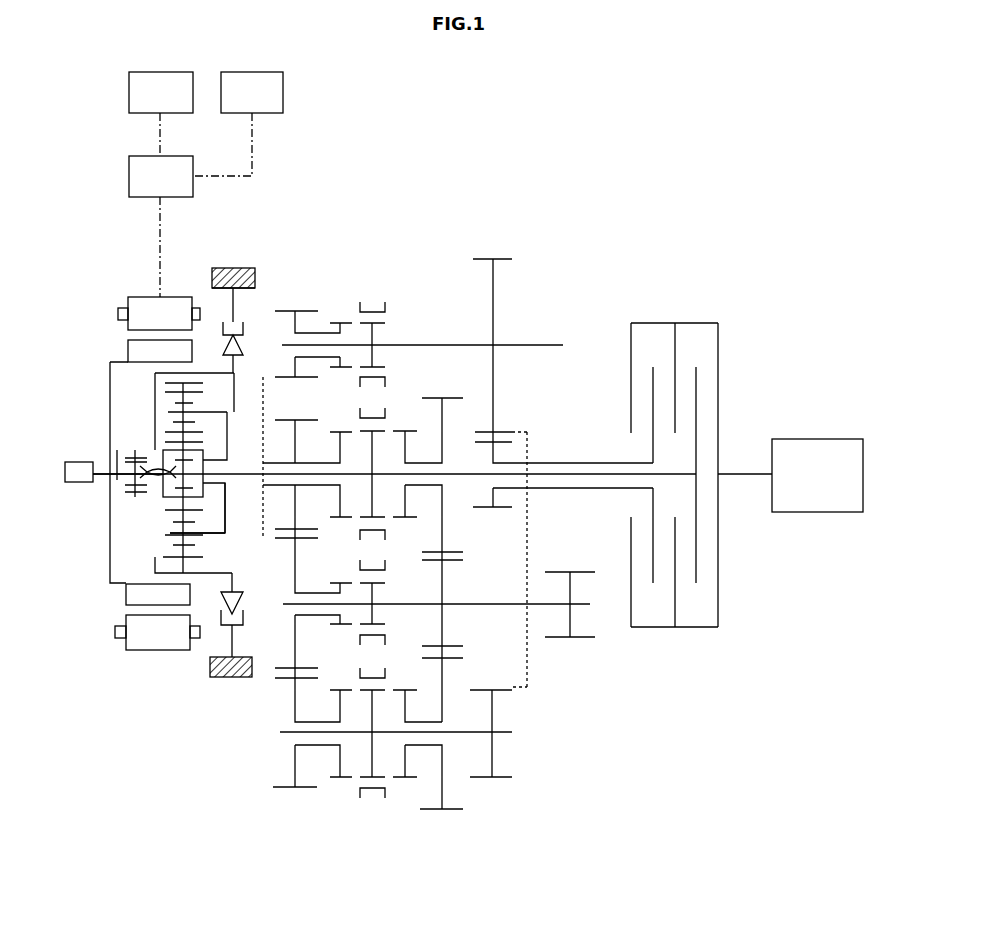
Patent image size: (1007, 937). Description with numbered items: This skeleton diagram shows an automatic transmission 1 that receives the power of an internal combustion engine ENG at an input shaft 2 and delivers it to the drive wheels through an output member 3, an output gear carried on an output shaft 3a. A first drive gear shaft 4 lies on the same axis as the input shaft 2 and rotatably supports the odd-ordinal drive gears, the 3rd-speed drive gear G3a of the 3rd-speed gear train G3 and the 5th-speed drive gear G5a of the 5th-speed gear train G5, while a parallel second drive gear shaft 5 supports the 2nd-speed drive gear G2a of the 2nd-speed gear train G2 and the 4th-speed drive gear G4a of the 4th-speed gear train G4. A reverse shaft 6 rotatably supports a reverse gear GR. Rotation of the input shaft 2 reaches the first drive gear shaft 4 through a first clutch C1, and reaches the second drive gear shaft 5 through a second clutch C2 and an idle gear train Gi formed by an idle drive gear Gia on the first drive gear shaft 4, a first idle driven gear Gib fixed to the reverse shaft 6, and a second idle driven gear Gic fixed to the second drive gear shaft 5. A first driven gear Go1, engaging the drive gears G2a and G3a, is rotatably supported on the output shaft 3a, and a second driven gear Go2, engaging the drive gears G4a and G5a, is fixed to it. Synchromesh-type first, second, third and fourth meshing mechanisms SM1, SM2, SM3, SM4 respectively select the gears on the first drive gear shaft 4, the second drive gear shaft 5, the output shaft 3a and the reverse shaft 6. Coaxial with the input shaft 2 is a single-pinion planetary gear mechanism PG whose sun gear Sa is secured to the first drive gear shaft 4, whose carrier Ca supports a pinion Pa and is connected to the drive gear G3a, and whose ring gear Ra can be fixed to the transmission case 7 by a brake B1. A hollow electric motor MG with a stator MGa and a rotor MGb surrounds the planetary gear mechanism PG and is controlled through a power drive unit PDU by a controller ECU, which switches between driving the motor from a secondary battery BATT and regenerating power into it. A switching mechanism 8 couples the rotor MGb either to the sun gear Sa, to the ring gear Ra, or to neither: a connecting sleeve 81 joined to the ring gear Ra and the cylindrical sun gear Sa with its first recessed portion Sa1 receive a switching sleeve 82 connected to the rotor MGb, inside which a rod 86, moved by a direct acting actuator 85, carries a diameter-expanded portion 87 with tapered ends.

The automatic transmission 1 is at (608, 218).
The input shaft 2 is at (743, 472).
The output member 3 is at (558, 640).
The output shaft 3a is at (585, 607).
The first drive gear shaft 4 is at (585, 472).
The second drive gear shaft 5 is at (510, 735).
The reverse shaft 6 is at (545, 350).
The transmission case 7 is at (233, 268).
The switching mechanism 8 is at (101, 468).
The connecting sleeve 81 is at (125, 455).
The switching sleeve 82 is at (125, 465).
The direct acting actuator 85 is at (82, 487).
The rod 86 is at (104, 466).
The diameter-expanded portion 87 is at (158, 480).
The electric motor MG is at (127, 434).
The stator MGa is at (135, 297).
The rotor MGb is at (128, 352).
The brake B1 is at (216, 311).
The planetary gear mechanism PG is at (200, 401).
The pinion Pa is at (168, 390).
The sun gear Sa is at (170, 440).
The first recessed portion Sa1 is at (190, 462).
The ring gear Ra is at (170, 557).
The carrier Ca is at (212, 537).
The reverse gear GR is at (300, 311).
The 3rd-speed gear train G3 is at (309, 417).
The 3rd-speed drive gear G3a is at (305, 530).
The 5th-speed gear train G5 is at (448, 395).
The 5th-speed drive gear G5a is at (453, 555).
The 2nd-speed gear train G2 is at (296, 802).
The 2nd-speed drive gear G2a is at (282, 795).
The 4th-speed gear train G4 is at (441, 822).
The 4th-speed drive gear G4a is at (455, 812).
The first driven gear Go1 is at (280, 675).
The second driven gear Go2 is at (455, 648).
The idle gear train Gi is at (563, 356).
The idle drive gear Gia is at (503, 508).
The first idle driven gear Gib is at (512, 258).
The second idle driven gear Gic is at (500, 780).
The first meshing mechanism SM1 is at (381, 410).
The second meshing mechanism SM2 is at (376, 806).
The third meshing mechanism SM3 is at (377, 643).
The fourth meshing mechanism SM4 is at (375, 298).
The first clutch C1 is at (702, 475).
The second clutch C2 is at (674, 475).
The secondary battery BATT is at (161, 114).
The controller ECU is at (238, 124).
The power drive unit PDU is at (161, 226).
The internal combustion engine ENG is at (817, 475).